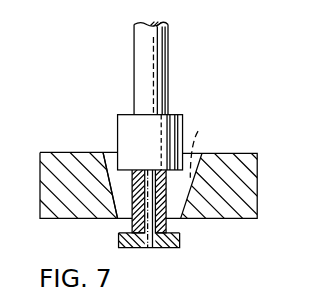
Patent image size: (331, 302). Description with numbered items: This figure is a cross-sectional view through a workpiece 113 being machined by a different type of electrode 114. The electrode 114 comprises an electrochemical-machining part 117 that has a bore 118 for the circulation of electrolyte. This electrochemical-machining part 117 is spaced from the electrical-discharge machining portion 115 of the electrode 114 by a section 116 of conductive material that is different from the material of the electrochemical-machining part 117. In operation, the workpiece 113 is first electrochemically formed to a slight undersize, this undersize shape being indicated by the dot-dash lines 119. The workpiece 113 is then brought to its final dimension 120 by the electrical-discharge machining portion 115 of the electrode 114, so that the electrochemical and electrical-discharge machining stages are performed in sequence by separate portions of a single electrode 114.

The workpiece 113 is at (258, 218).
The electrode 114 is at (166, 55).
The electrical-discharge machining portion 115 is at (181, 112).
The section of conductive material 116 is at (128, 227).
The electrochemical-machining part 117 is at (178, 246).
The bore 118 is at (152, 226).
The dot-dash lines 119 is at (203, 127).
The final dimension 120 is at (106, 170).